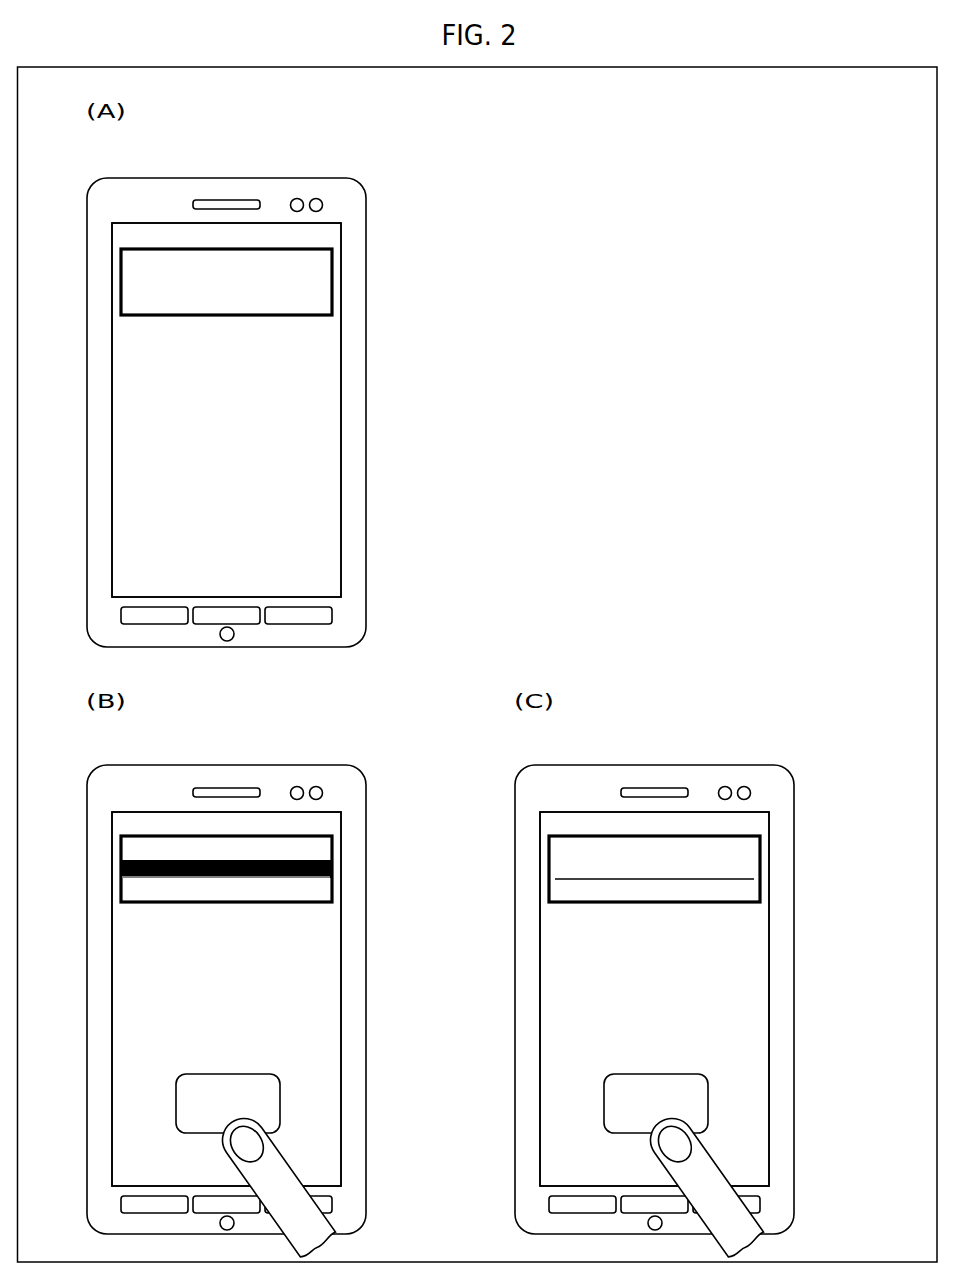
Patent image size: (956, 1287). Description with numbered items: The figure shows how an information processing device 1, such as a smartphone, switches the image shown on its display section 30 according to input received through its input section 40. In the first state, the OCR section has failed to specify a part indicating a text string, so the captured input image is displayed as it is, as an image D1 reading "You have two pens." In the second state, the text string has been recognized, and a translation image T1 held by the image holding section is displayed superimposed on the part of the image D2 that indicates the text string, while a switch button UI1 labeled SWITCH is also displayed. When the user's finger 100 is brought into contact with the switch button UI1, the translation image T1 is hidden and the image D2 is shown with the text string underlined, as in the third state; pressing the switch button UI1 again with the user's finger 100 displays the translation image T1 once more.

The information processing device 1 is at (302, 178).
The display section 30 is at (342, 410).
The input section 40 is at (342, 410).
The image D1 is at (334, 256).
The image D2 is at (334, 843).
The translation image T1 is at (334, 867).
The switch button UI1 is at (281, 1102).
The user's finger 100 is at (278, 1166).